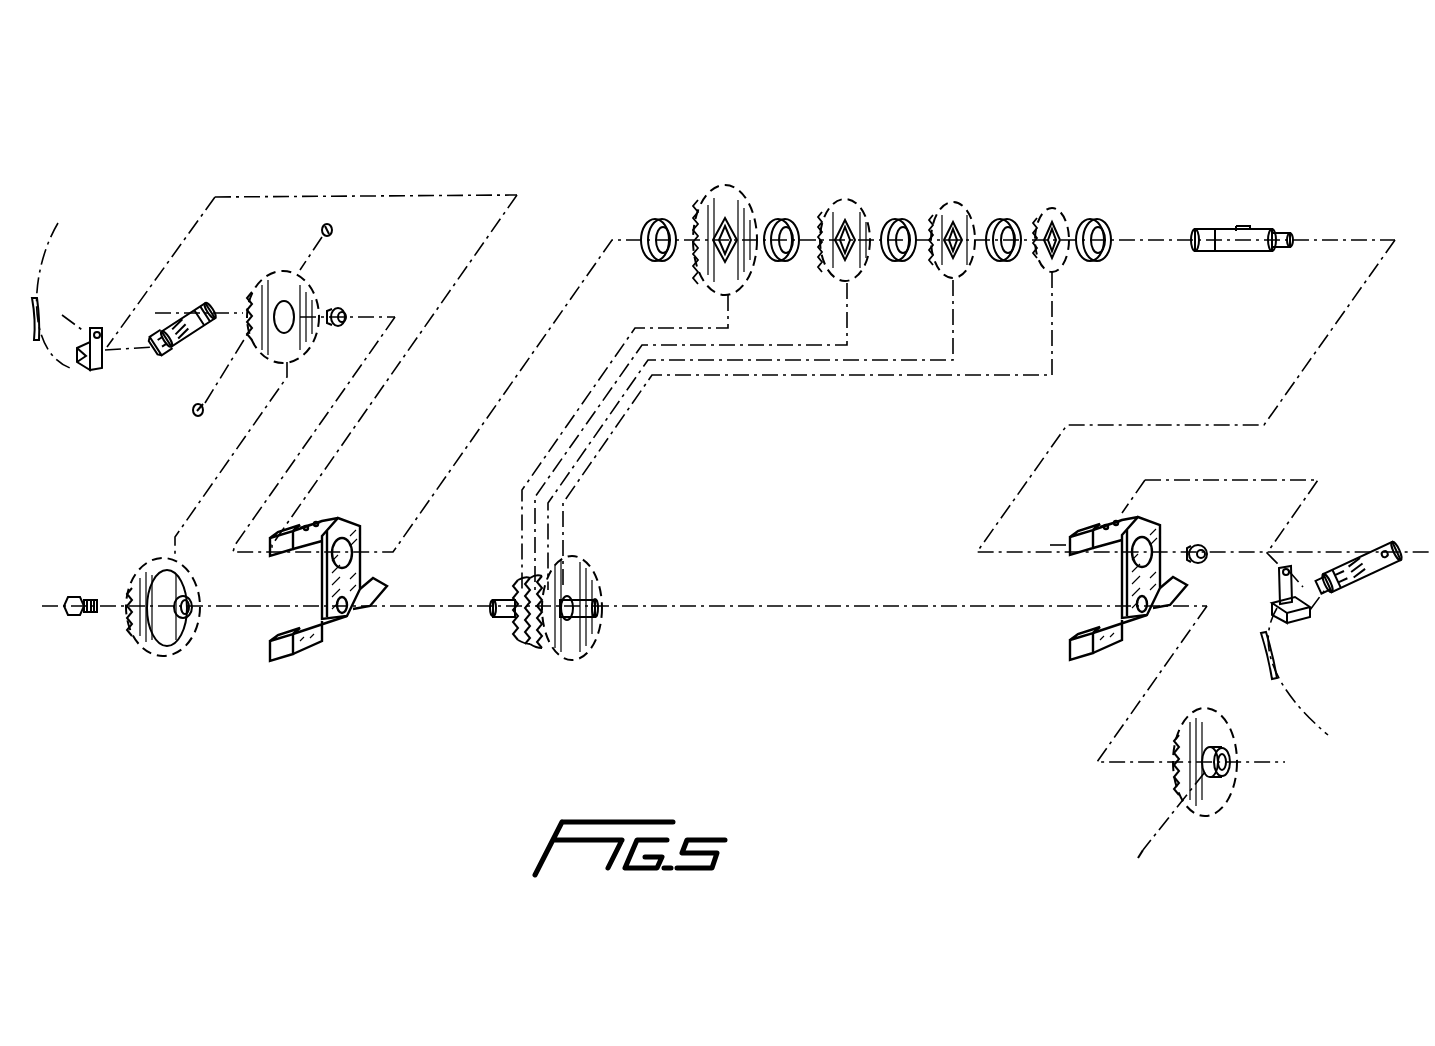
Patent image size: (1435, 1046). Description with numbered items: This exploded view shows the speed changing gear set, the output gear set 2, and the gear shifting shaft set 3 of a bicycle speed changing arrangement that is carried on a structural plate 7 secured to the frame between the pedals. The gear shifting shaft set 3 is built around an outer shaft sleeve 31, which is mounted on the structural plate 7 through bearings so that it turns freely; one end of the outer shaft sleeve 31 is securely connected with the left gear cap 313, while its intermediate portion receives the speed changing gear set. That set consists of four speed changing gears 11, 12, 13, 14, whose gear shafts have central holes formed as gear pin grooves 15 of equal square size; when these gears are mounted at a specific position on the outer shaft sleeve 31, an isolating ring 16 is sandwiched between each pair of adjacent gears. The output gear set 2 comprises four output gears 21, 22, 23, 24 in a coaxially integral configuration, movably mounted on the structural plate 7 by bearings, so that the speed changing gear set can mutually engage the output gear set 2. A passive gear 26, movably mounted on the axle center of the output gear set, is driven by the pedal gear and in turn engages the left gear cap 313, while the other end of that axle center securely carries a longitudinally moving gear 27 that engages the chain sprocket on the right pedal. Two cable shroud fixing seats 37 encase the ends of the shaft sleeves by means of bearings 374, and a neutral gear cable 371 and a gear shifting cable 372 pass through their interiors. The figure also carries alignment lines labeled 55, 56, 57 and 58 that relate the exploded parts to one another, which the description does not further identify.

The output gear set 2 is at (540, 664).
The gear shifting shaft set 3 is at (1242, 228).
The structural plate 7 is at (324, 657).
The speed changing gear 11 is at (1062, 215).
The speed changing gear 12 is at (962, 205).
The speed changing gear 13 is at (855, 200).
The speed changing gear 14 is at (735, 190).
The gear pin groove 15 is at (705, 217).
The isolating ring 16 is at (652, 222).
The output gear 21 is at (513, 628).
The output gear 22 is at (540, 642).
The output gear 23 is at (556, 656).
The output gear 24 is at (590, 656).
The passive gear 26 is at (156, 657).
The longitudinally moving gear 27 is at (1175, 773).
The outer shaft sleeve 31 is at (1230, 254).
The cable shroud fixing seat 37 is at (178, 352).
The alignment line 55 is at (807, 431).
The alignment line 56 is at (750, 435).
The alignment line 57 is at (691, 436).
The alignment line 58 is at (625, 442).
The left gear cap 313 is at (283, 283).
The neutral gear cable 371 is at (46, 312).
The gear shifting cable 372 is at (1273, 663).
The bearing 374 is at (346, 310).